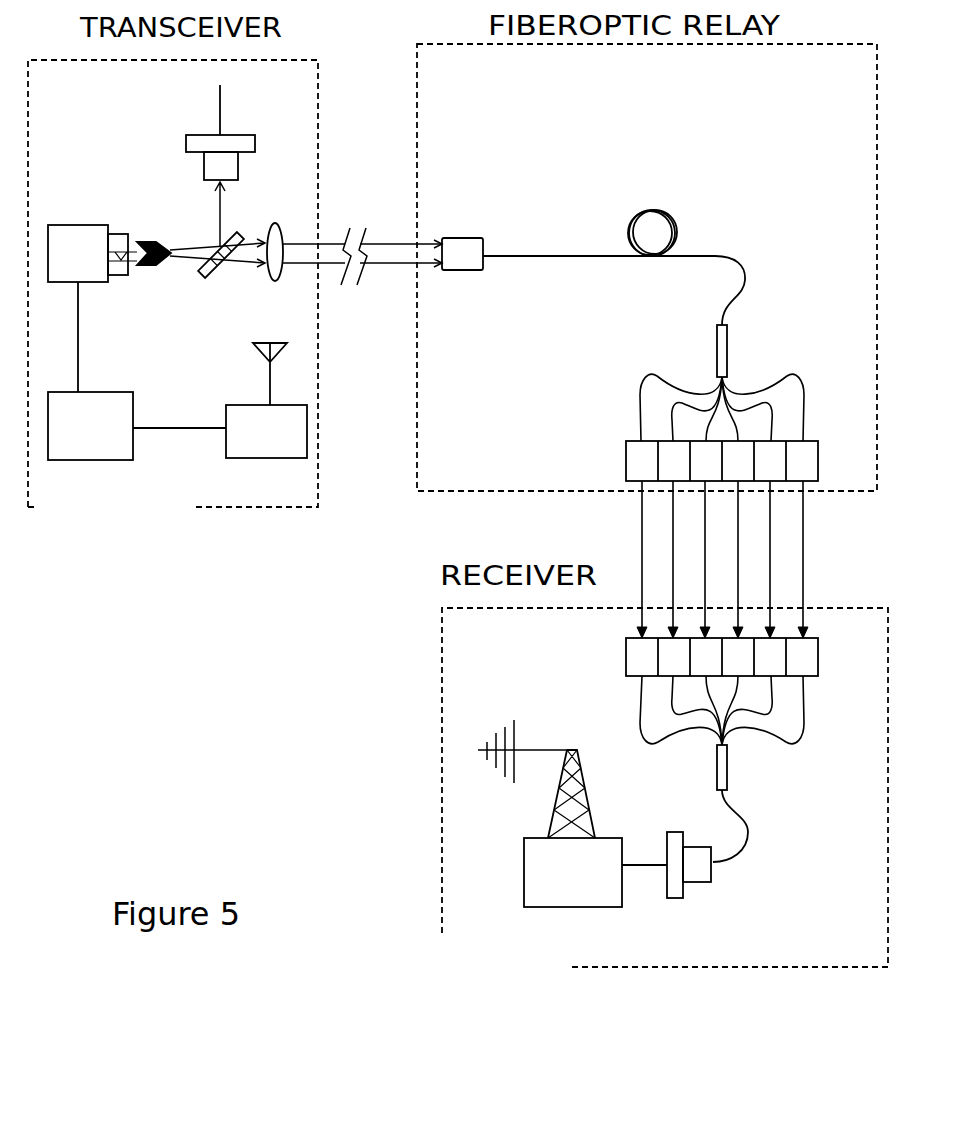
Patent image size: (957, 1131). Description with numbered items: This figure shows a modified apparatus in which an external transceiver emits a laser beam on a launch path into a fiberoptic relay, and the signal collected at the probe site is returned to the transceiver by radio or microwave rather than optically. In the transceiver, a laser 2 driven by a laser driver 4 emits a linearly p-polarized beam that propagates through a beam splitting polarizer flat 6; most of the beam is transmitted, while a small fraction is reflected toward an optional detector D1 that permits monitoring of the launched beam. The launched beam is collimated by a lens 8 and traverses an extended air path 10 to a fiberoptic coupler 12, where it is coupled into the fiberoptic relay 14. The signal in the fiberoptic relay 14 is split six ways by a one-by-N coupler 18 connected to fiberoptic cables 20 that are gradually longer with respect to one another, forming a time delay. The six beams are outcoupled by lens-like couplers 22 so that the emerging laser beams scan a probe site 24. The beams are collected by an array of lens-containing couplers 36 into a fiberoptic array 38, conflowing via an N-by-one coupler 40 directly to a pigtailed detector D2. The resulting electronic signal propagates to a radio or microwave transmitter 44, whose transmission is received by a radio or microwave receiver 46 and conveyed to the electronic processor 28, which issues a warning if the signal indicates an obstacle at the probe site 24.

The laser 2 is at (139, 239).
The laser driver 4 is at (70, 205).
The beam splitting polarizer flat 6 is at (227, 268).
The lens 8 is at (275, 240).
The extended air path 10 is at (357, 240).
The fiberoptic coupler 12 is at (475, 240).
The fiberoptic relay 14 is at (614, 261).
The 1×N coupler 18 is at (782, 350).
The fiberoptic cables 20 is at (749, 407).
The lens-like couplers 22 is at (640, 462).
The probe site 24 is at (763, 559).
The electronic processor 28 is at (100, 480).
The lens-containing couplers 36 is at (644, 662).
The fiberoptic array 38 is at (762, 744).
The N×1 coupler 40 is at (672, 803).
The radio or microwave transmitter 44 is at (547, 925).
The radio or microwave receiver 46 is at (282, 517).
The detector D1 is at (262, 160).
The pigtailed detector D2 is at (703, 878).